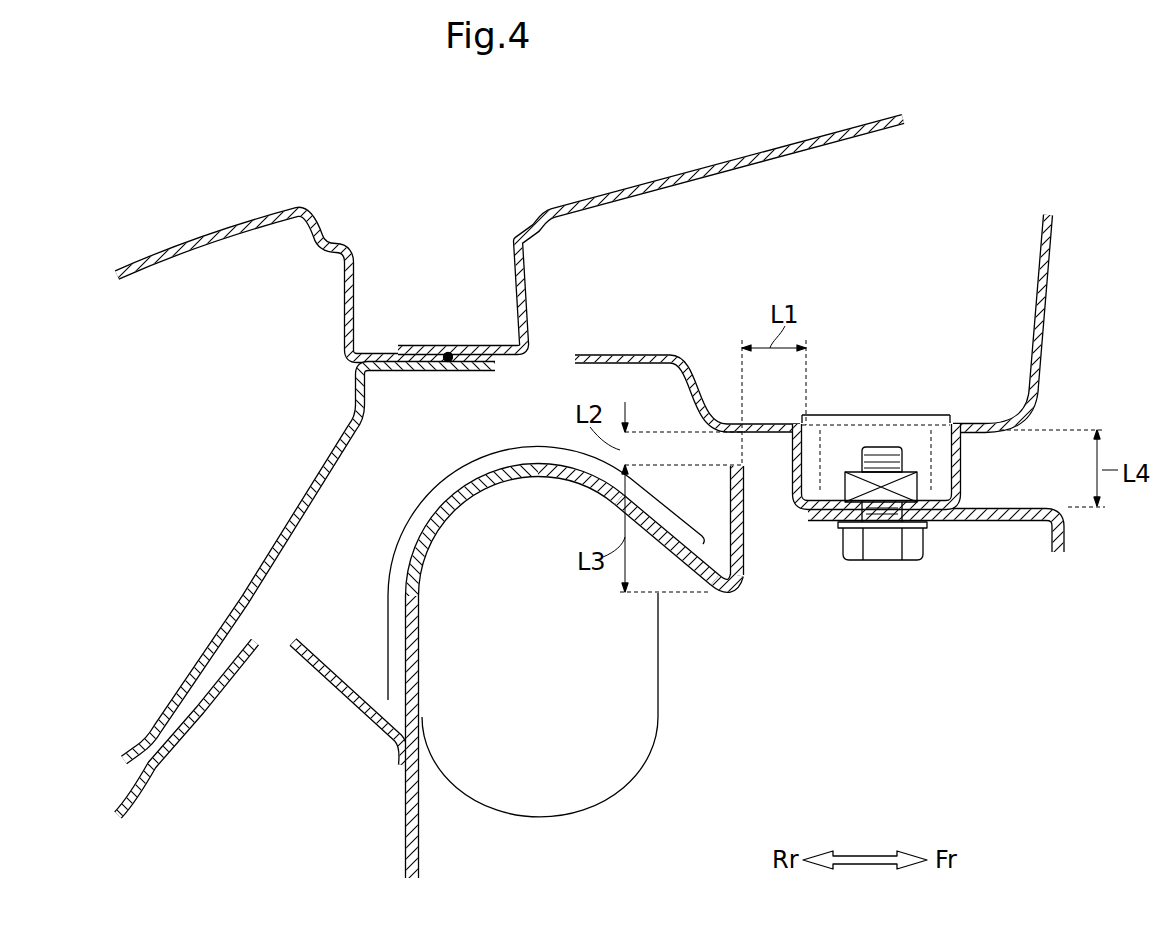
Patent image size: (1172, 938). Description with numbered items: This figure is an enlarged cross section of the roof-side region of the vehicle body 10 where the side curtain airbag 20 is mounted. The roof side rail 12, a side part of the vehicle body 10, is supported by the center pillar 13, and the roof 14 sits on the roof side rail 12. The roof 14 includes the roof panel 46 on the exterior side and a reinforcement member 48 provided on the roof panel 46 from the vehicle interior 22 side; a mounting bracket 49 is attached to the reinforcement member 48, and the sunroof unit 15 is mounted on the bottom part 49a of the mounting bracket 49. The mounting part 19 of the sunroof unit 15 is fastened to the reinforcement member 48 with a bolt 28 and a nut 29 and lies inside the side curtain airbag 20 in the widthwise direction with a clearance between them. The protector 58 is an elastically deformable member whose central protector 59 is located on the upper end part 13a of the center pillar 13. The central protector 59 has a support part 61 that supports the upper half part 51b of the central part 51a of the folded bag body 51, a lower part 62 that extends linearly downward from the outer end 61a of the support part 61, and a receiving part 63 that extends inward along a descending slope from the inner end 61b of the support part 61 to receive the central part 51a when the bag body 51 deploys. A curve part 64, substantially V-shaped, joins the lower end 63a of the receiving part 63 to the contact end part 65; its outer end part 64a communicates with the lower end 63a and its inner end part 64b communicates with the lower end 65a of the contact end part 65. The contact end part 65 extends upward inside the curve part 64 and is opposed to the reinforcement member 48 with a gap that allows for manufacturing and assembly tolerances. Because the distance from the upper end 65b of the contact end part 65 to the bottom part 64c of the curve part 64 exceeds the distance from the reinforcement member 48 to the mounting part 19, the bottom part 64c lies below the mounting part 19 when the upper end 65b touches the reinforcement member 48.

The vehicle body 10 is at (215, 188).
The roof side rail 12 is at (170, 247).
The center pillar 13 is at (260, 728).
The upper end part 13a is at (192, 740).
The roof 14 is at (783, 133).
The sunroof unit 15 is at (953, 413).
The mounting part 19 is at (1005, 523).
The side curtain airbag 20 is at (360, 557).
The vehicle interior 22 is at (903, 715).
The bolt 28 is at (884, 550).
The nut 29 is at (900, 432).
The roof panel 46 is at (697, 162).
The reinforcement member 48 is at (760, 424).
The mounting bracket 49 is at (961, 463).
The bottom part 49a is at (925, 519).
The bag body 51 is at (588, 708).
The central part 51a is at (617, 782).
The upper half part 51b is at (537, 446).
The protector 58 is at (400, 507).
The central protector 59 is at (477, 459).
The support part 61 is at (437, 484).
The outer end 61a is at (419, 690).
The inner end 61b is at (613, 503).
The lower part 62 is at (394, 700).
The receiving part 63 is at (673, 516).
The lower end 63a is at (640, 525).
The curve part 64 is at (685, 595).
The outer end part 64a is at (697, 596).
The inner end part 64b is at (745, 568).
The bottom part 64c is at (745, 593).
The contact end part 65 is at (757, 463).
The lower end 65a is at (745, 530).
The upper end 65b is at (740, 467).